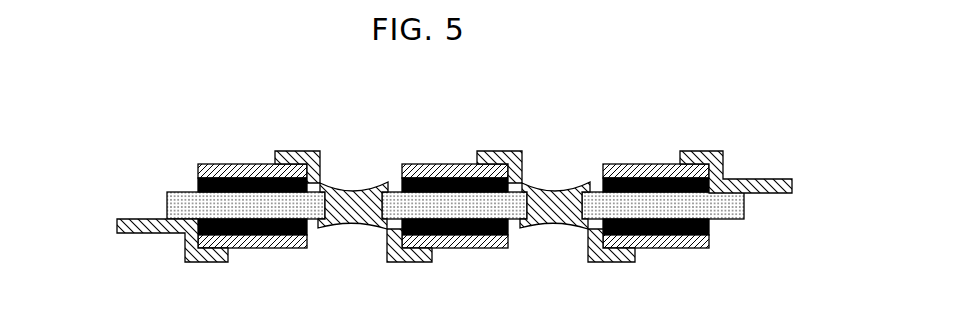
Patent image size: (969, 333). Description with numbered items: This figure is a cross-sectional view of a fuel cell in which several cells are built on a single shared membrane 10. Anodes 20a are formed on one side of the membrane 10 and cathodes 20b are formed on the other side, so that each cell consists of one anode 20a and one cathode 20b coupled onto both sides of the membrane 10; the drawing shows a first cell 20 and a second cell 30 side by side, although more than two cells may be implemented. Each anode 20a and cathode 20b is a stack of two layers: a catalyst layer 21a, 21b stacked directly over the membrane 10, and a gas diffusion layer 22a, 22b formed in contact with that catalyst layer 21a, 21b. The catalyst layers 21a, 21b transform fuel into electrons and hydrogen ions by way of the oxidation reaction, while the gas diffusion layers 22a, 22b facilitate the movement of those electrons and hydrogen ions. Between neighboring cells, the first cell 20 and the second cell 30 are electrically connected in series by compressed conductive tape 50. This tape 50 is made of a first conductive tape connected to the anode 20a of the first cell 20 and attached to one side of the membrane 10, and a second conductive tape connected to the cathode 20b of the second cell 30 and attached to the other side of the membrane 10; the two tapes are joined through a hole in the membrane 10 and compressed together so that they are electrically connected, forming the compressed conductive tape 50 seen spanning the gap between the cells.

The membrane 10 is at (745, 208).
The first cell 20 is at (169, 204).
The anode 20a is at (162, 141).
The cathode 20b is at (162, 272).
The catalyst layer 21a is at (197, 186).
The catalyst layer 21b is at (197, 232).
The gas diffusion layer 22a is at (209, 163).
The gas diffusion layer 22b is at (205, 247).
The second cell 30 is at (462, 156).
The compressed conductive tape 50 is at (360, 191).